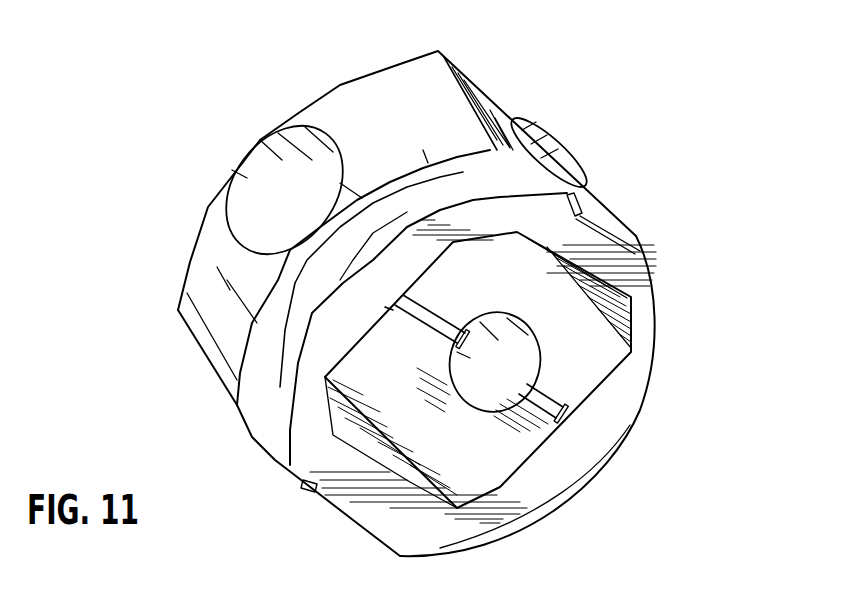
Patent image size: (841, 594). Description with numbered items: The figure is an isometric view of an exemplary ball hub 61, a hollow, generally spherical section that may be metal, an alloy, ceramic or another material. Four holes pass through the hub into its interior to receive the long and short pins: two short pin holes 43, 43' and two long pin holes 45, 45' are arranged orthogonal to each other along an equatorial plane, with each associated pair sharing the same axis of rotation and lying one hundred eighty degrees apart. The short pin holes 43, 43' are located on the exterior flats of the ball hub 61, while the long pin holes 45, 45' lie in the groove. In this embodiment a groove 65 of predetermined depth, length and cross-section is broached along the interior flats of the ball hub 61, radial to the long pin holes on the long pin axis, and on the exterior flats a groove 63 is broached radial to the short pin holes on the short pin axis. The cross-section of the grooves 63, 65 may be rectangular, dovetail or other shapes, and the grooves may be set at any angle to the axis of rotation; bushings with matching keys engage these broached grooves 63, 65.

The ball hub 61 is at (356, 90).
The long pin hole 45 is at (242, 159).
The short pin hole 43 is at (552, 119).
The groove 65 is at (390, 308).
The short pin hole 43' is at (263, 411).
The groove 63 is at (313, 490).
The long pin hole 45' is at (581, 396).